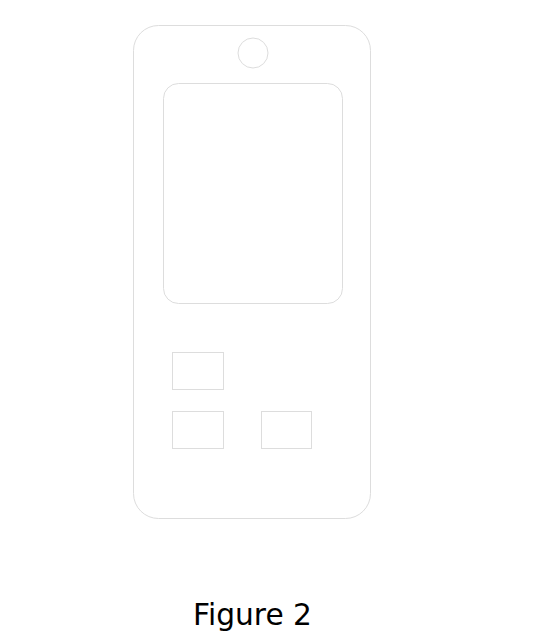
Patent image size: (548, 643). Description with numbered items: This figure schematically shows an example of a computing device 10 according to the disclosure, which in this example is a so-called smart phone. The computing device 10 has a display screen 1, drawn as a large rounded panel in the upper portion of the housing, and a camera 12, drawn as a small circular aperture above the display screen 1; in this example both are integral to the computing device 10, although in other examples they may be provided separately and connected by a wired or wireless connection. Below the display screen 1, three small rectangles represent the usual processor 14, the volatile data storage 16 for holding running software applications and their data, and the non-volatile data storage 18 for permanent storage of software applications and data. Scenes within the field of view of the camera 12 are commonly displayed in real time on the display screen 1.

The display screen 1 is at (164, 193).
The computing device 10 is at (370, 370).
The camera 12 is at (238, 53).
The processor 14 is at (172, 372).
The volatile data storage 16 is at (172, 427).
The non-volatile data storage 18 is at (311, 429).